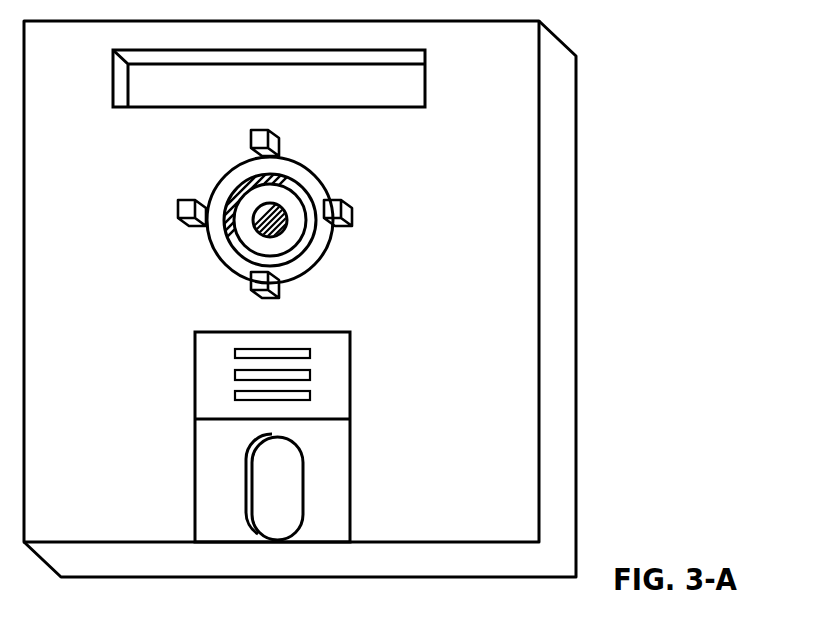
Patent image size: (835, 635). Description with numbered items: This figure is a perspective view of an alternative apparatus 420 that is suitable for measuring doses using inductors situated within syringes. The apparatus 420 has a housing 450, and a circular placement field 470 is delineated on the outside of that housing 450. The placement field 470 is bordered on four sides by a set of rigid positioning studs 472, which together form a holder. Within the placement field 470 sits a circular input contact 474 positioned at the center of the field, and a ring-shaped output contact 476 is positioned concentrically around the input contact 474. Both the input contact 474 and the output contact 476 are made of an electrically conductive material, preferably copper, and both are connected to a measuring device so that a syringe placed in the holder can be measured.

The alternative apparatus 420 is at (371, 299).
The housing 450 is at (557, 88).
The circular placement field 470 is at (233, 210).
The rigid positioning studs 472 is at (279, 143).
The circular input contact 474 is at (258, 207).
The ring-shaped output contact 476 is at (230, 256).